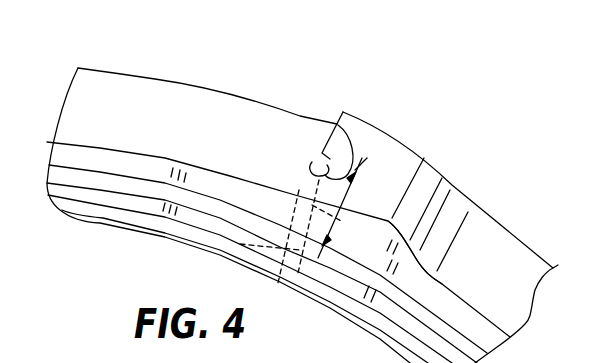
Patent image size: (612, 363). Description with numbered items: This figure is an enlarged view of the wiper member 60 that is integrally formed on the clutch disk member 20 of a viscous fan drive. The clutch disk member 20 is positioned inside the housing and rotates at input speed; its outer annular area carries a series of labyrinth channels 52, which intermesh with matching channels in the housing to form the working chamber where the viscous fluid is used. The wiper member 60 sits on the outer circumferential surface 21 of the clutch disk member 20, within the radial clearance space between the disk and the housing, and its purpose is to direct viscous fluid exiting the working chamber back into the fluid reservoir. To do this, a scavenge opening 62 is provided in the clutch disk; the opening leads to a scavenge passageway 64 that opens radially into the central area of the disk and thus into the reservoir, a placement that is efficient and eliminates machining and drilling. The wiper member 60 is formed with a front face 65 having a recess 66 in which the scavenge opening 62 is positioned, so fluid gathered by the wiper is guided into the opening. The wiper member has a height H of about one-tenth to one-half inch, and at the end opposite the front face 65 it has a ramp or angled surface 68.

The clutch disk member 20 is at (113, 97).
The outer circumferential surface 21 is at (190, 103).
The labyrinth channels 52 is at (103, 207).
The wiper member 60 is at (417, 148).
The scavenge opening 62 is at (318, 165).
The scavenge passageway 64 is at (233, 247).
The front face 65 is at (298, 188).
The recess 66 is at (329, 173).
The ramp or angled surface 68 is at (427, 173).
The height H is at (350, 207).